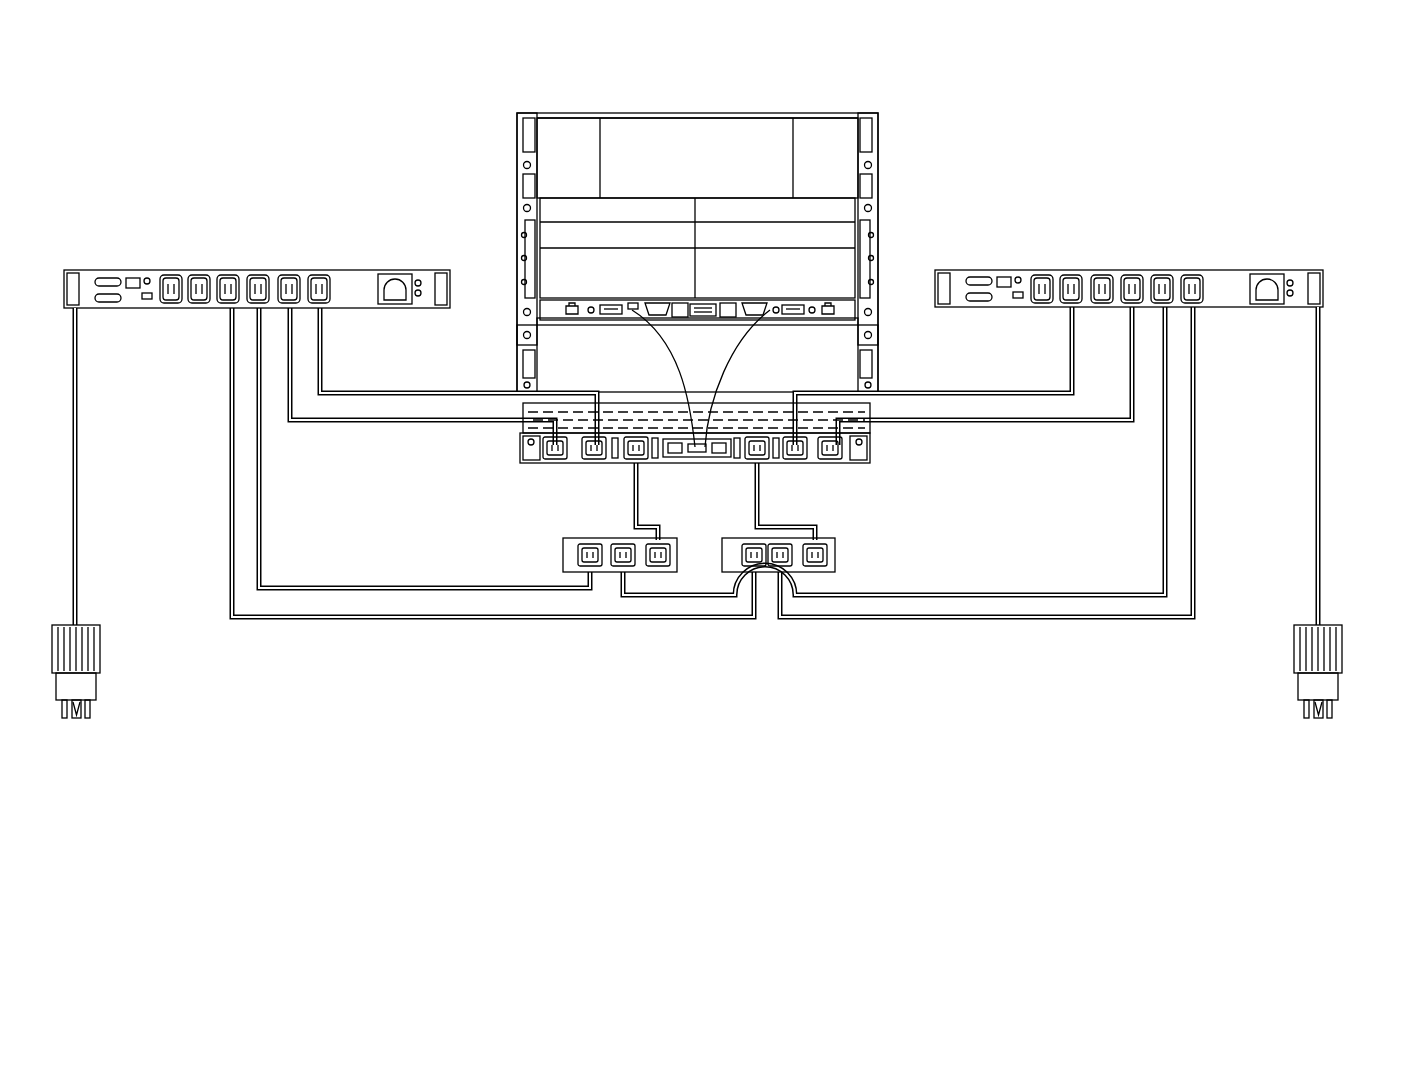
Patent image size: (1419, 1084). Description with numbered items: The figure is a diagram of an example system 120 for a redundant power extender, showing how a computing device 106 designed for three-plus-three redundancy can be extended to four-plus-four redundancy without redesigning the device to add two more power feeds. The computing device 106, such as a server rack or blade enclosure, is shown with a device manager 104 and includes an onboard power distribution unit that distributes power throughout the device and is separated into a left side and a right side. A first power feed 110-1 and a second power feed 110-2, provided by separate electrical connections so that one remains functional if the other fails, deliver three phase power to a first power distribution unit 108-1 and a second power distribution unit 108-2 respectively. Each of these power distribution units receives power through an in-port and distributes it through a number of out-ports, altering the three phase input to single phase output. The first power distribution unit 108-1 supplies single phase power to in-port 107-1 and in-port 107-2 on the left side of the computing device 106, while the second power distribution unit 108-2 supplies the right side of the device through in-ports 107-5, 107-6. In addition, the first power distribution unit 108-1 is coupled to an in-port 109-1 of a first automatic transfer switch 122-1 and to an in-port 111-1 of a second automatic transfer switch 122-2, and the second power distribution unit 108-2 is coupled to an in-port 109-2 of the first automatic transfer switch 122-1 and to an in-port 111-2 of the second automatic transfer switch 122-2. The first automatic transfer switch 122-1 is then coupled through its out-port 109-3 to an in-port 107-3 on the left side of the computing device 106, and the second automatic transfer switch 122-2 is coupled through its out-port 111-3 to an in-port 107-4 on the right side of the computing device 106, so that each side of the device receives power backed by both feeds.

The redundant power extender system 120 is at (1016, 122).
The device manager 104 is at (866, 300).
The computing device 106 is at (870, 456).
The in-port 107-1 is at (548, 464).
The in-port 107-2 is at (595, 465).
The in-port 107-3 is at (638, 466).
The in-port 107-4 is at (745, 463).
The power strip outlet 107-5 is at (790, 432).
The power strip outlet 107-6 is at (835, 465).
The first power distribution unit 108-1 is at (222, 228).
The second power distribution unit 108-2 is at (1168, 228).
The in-port 109-1 is at (596, 576).
The in-port 109-2 is at (636, 576).
The out-port 109-3 is at (662, 578).
The first power feed 110-1 is at (83, 756).
The second power feed 110-2 is at (1302, 754).
The in-port 111-1 is at (740, 578).
The in-port 111-2 is at (786, 527).
The out-port 111-3 is at (831, 566).
The first automatic transfer switch 122-1 is at (565, 548).
The second automatic transfer switch 122-2 is at (838, 545).